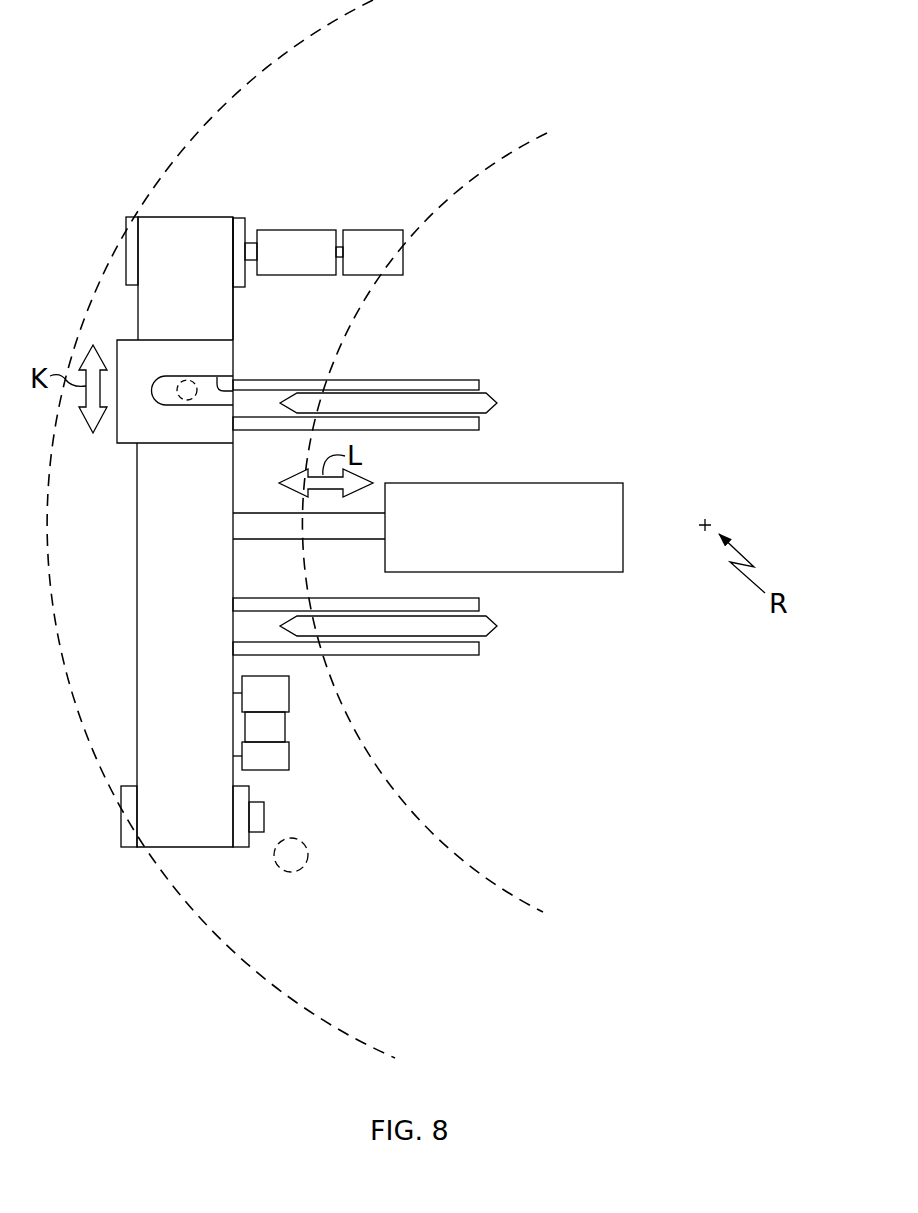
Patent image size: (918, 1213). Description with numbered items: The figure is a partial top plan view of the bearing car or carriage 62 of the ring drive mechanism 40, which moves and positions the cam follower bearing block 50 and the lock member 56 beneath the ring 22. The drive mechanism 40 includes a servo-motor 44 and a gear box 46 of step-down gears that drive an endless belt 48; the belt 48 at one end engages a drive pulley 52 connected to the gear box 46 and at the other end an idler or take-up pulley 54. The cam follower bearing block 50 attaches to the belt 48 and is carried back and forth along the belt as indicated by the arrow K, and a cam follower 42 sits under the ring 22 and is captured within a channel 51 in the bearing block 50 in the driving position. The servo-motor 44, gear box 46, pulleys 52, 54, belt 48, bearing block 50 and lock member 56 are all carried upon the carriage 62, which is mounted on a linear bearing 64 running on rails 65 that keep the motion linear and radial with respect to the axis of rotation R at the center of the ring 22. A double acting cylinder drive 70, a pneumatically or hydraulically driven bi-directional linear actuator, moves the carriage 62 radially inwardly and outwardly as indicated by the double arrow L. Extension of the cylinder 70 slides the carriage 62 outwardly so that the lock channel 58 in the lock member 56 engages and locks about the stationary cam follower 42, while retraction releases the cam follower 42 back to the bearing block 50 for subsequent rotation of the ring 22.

The ring 22 is at (463, 160).
The ring drive mechanism 40 is at (228, 553).
The cam follower 42 is at (185, 378).
The servo-motor 44 is at (370, 229).
The gear box 46 is at (295, 229).
The endless belt 48 is at (209, 222).
The cam follower bearing block 50 is at (183, 413).
The channel 51 is at (235, 384).
The drive pulley 52 is at (126, 248).
The idler pulley 54 is at (121, 845).
The lock member 56 is at (278, 768).
The lock channel 58 is at (278, 695).
The bearing car or carriage 62 is at (377, 746).
The linear bearing 64 is at (437, 380).
The rails 65 is at (497, 402).
The double acting cylinder drive 70 is at (586, 491).